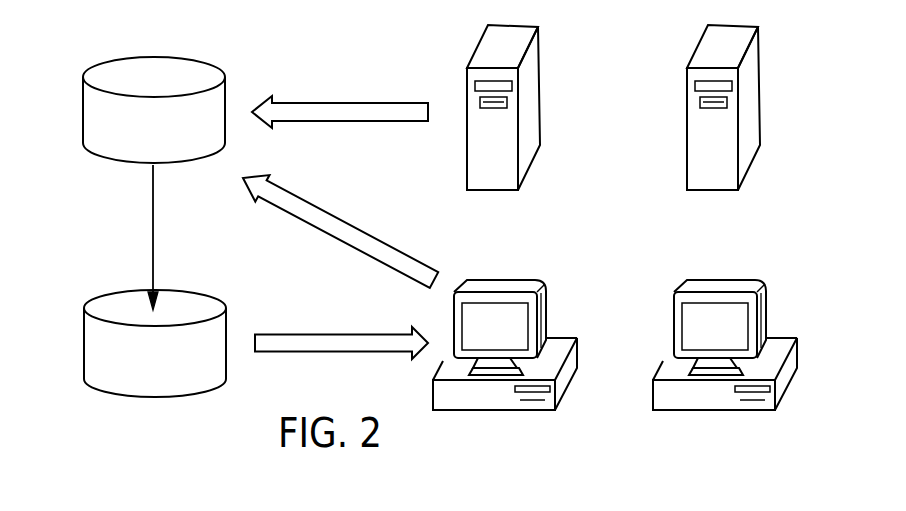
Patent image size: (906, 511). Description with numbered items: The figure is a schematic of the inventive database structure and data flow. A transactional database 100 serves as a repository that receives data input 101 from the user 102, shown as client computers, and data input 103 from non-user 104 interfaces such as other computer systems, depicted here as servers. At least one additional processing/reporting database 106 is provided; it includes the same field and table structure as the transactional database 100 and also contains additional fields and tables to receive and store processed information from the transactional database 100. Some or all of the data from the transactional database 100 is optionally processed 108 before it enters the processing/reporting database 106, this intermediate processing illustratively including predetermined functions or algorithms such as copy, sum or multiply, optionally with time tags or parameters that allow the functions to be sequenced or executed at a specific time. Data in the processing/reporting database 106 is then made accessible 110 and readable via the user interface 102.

The transactional database 100 is at (172, 145).
The data input from the user 101 is at (372, 250).
The user 102 is at (636, 350).
The data input from non-user 103 is at (344, 113).
The non-user interfaces 104 is at (634, 131).
The processing/reporting database 106 is at (172, 376).
The processing 108 is at (153, 237).
The accessible data 110 is at (290, 345).